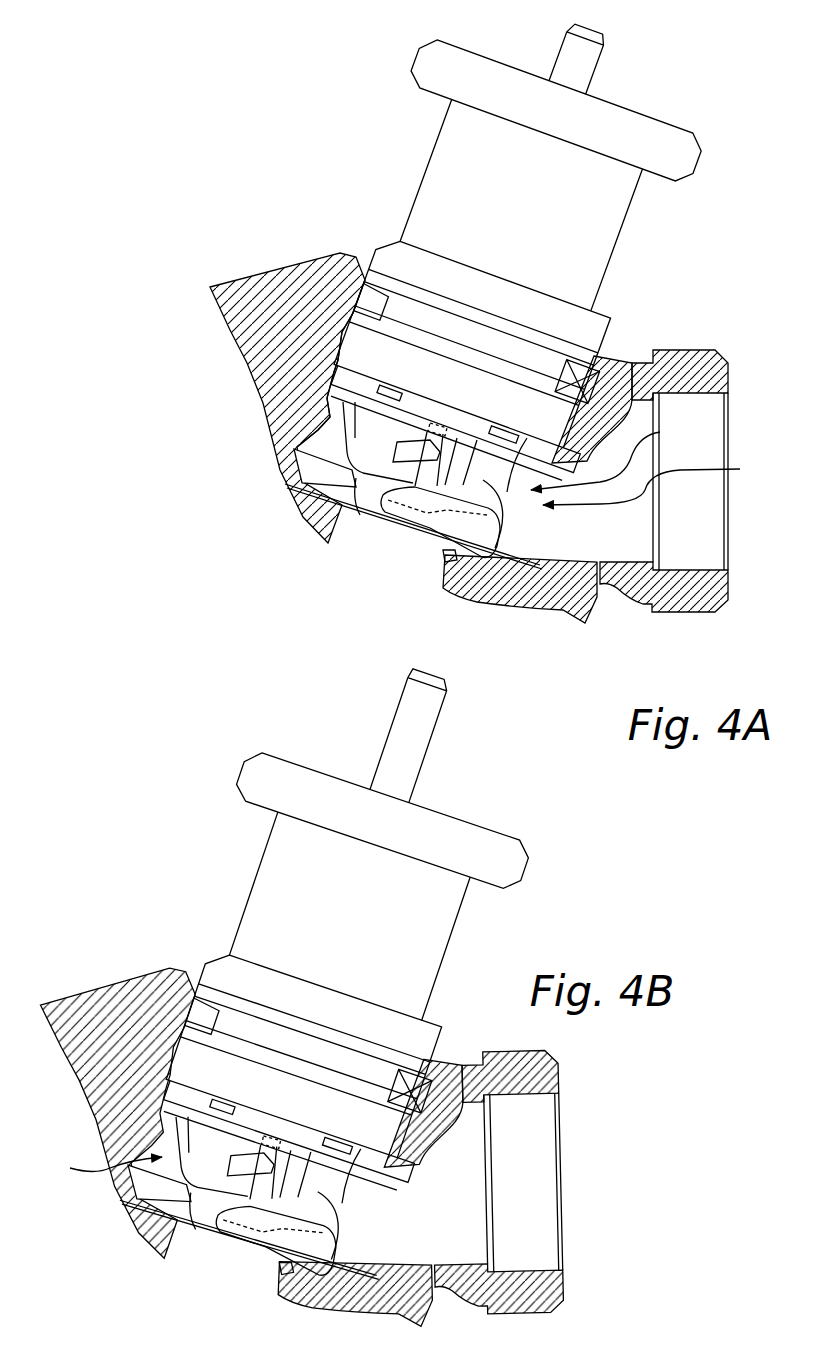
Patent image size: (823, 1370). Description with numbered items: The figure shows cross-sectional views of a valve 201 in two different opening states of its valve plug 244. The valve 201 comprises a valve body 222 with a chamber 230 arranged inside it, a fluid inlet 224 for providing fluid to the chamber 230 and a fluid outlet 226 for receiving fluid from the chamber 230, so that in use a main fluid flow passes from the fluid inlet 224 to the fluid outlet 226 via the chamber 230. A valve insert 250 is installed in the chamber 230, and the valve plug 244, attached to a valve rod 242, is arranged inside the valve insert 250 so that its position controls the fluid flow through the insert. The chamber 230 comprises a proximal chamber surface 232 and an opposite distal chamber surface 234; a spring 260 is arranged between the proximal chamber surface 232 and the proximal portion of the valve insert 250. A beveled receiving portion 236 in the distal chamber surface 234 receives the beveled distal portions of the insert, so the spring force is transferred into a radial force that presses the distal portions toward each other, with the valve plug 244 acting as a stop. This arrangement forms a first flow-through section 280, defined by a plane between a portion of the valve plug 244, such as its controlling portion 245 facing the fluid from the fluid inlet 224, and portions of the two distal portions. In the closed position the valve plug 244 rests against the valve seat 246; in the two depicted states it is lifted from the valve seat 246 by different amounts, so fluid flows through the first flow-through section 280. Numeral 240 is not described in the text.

In FIG. 4A, the valve 201 is at (286, 132).
In FIG. 4A, the valve body 222 is at (268, 412).
In FIG. 4A, the fluid inlet 224 is at (359, 620).
In FIG. 4A, the fluid outlet 226 is at (671, 526).
In FIG. 4A, the chamber 230 is at (327, 430).
In FIG. 4A, the proximal chamber surface 232 is at (308, 340).
In FIG. 4A, the distal chamber surface 234 is at (447, 553).
In FIG. 4A, the receiving portion 236 is at (300, 520).
In FIG. 4A, the fluid flow path 240 is at (668, 479).
In FIG. 4A, the valve rod 242 is at (435, 437).
In FIG. 4A, the valve plug 244 is at (500, 487).
In FIG. 4A, the controlling portion 245 is at (360, 483).
In FIG. 4A, the valve seat 246 is at (447, 556).
In FIG. 4A, the valve insert 250 is at (622, 454).
In FIG. 4B, the valve insert 250 is at (92, 1165).
In FIG. 4A, the spring 260 is at (605, 360).
In FIG. 4A, the first flow-through section 280 is at (395, 505).
In FIG. 4B, the first flow-through section 280 is at (217, 1233).